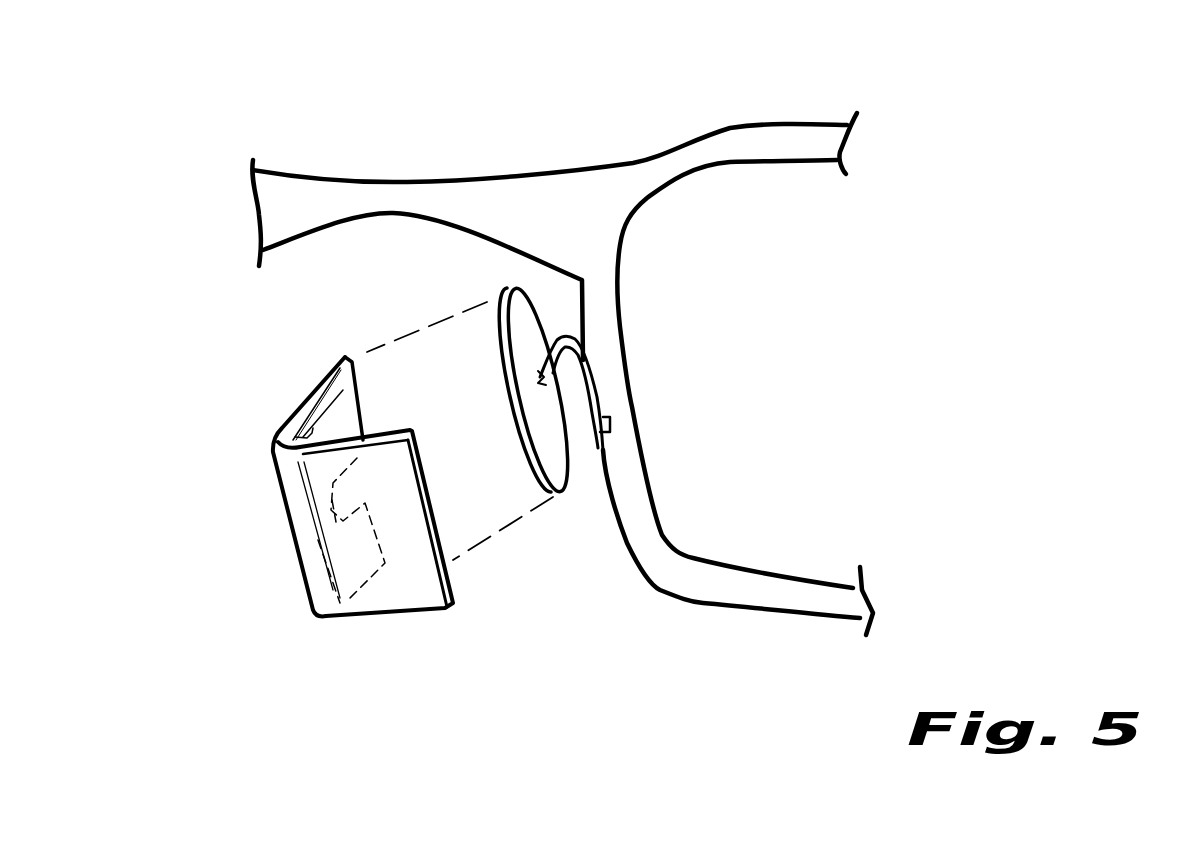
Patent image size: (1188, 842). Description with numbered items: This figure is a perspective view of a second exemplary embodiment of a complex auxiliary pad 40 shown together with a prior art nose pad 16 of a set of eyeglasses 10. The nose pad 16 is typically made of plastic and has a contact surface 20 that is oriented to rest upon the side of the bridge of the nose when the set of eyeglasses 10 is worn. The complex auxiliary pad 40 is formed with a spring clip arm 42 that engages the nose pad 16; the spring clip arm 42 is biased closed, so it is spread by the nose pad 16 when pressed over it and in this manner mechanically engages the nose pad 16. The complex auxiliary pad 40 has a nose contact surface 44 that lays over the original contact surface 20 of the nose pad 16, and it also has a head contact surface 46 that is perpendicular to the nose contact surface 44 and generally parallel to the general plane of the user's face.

The set of eyeglasses 10 is at (418, 142).
The nose pad 16 is at (560, 428).
The contact surface 20 is at (530, 458).
The complex auxiliary pad 40 is at (293, 544).
The spring clip arm 42 is at (330, 427).
The nose contact surface 44 is at (297, 410).
The head contact surface 46 is at (418, 578).